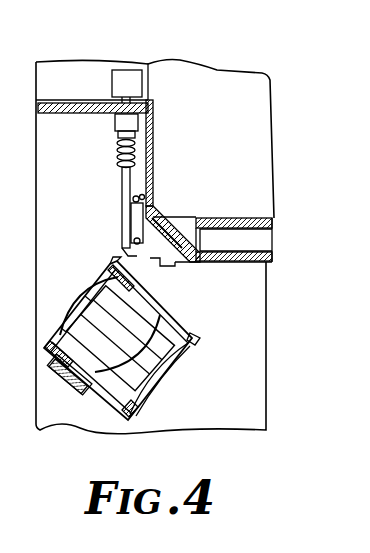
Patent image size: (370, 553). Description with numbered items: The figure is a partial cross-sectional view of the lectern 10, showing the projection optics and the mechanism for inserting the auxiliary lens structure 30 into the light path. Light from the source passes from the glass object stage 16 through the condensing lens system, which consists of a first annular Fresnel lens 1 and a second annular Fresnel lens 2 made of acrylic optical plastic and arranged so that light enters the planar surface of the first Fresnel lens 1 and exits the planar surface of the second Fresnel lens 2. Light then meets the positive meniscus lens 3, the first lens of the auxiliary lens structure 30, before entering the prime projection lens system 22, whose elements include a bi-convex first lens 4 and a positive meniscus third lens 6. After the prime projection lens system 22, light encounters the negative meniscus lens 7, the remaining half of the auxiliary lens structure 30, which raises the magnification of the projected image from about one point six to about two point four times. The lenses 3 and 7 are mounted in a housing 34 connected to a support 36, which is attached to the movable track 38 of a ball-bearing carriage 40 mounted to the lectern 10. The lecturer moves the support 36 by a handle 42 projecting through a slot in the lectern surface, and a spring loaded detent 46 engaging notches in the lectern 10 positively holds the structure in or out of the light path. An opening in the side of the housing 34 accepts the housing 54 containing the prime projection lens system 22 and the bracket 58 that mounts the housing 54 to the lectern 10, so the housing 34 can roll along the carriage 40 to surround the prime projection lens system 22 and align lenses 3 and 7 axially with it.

The first annular Fresnel lens 1 is at (270, 226).
The second annular Fresnel lens 2 is at (249, 263).
The positive meniscus lens 3 is at (178, 390).
The first lens 4 is at (117, 380).
The third lens 6 is at (46, 347).
The negative meniscus lens 7 is at (72, 318).
The lectern 10 is at (225, 67).
The glass object stage 16 is at (240, 218).
The prime projection lens system 22 is at (110, 309).
The auxiliary lens structure 30 is at (202, 334).
The housing 34 is at (136, 411).
The support 36 is at (122, 197).
The movable track 38 is at (131, 221).
The ball-bearing carriage 40 is at (144, 198).
The handle 42 is at (128, 76).
The spring loaded detent 46 is at (115, 127).
The housing 54 is at (102, 367).
The bracket 58 is at (167, 265).